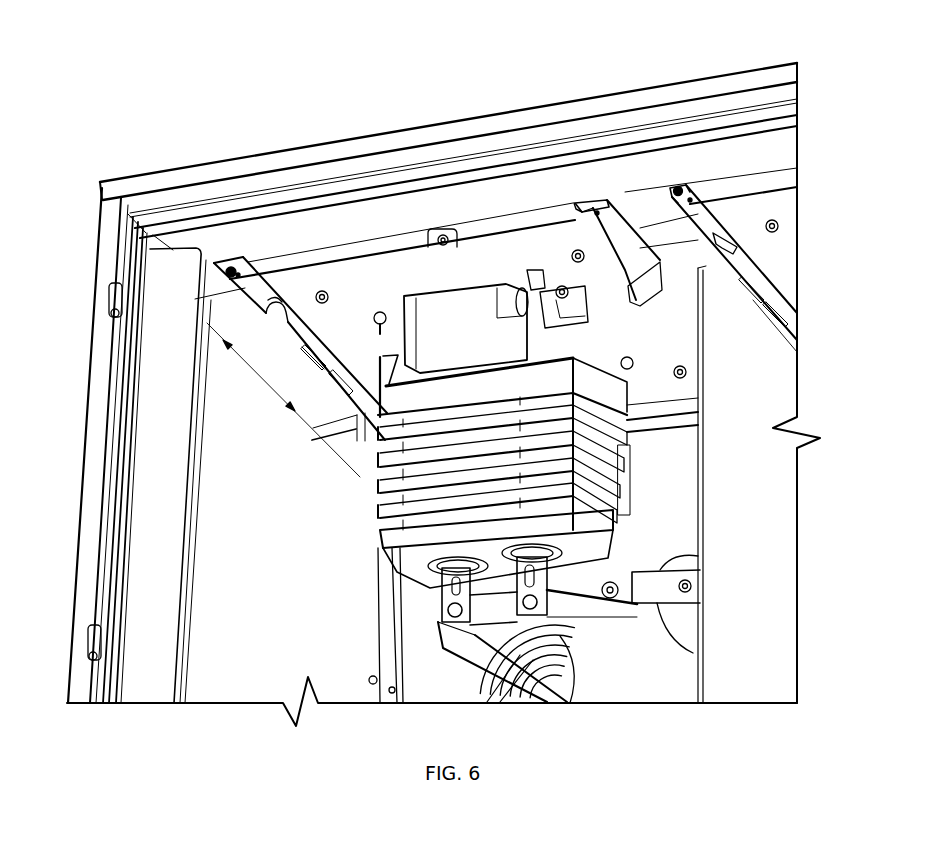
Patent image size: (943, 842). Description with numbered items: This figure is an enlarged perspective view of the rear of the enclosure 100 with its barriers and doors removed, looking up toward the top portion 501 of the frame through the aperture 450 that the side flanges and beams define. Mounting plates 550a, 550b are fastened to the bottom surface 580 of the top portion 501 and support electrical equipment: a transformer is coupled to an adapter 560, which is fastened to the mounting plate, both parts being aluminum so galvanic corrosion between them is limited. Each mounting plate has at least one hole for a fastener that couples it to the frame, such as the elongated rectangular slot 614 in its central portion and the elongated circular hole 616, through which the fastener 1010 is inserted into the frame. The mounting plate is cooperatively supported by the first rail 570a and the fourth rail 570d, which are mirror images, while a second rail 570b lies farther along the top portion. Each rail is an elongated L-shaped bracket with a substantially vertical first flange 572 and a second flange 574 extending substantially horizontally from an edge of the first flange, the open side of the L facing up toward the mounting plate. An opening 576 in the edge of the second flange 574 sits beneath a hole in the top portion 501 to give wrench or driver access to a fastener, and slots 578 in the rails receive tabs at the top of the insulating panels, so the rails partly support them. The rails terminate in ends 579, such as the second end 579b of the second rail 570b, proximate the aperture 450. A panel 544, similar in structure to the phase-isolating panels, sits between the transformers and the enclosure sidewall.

The enclosure 100 is at (212, 58).
The fastener 1010 is at (582, 235).
The top portion 501 is at (663, 210).
The aperture 450 is at (156, 533).
The panel 544 is at (298, 563).
The mounting plate 550a is at (428, 283).
The mounting plate 550b is at (787, 168).
The first rail 570a is at (268, 282).
The second rail 570b is at (702, 203).
The fourth rail 570d is at (573, 205).
The first flange 572 is at (603, 202).
The second flange 574 is at (648, 292).
The opening 576 is at (266, 310).
The slot 578 is at (310, 366).
The end 579 is at (230, 268).
The second end 579b is at (677, 186).
The bottom surface 580 is at (688, 262).
The adapter 560 is at (587, 300).
The slot 614 is at (537, 278).
The hole 616 is at (565, 258).